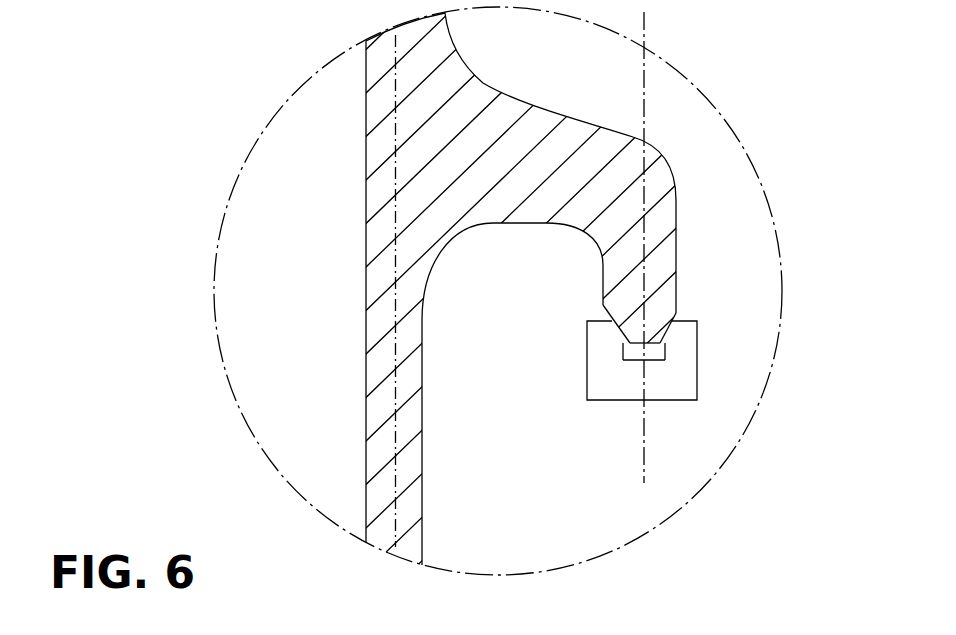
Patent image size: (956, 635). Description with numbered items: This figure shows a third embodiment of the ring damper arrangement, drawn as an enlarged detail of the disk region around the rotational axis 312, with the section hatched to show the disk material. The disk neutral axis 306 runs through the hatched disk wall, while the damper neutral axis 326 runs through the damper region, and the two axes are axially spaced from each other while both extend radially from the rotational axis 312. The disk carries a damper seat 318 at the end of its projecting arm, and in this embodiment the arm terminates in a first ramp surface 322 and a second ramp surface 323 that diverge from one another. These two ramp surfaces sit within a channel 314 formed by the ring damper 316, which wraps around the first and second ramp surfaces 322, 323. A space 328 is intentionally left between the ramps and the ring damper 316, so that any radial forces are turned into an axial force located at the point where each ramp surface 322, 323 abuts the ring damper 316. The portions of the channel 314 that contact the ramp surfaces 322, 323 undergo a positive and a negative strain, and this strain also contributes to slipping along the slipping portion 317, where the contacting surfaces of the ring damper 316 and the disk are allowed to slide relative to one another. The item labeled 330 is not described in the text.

The disk neutral axis 306 is at (385, 303).
The rotational axis 312 is at (662, 90).
The channel 314 is at (617, 353).
The ring damper 316 is at (595, 368).
The slipping portion 317 is at (617, 343).
The damper seat 318 is at (680, 312).
The first ramp surface 322 is at (622, 335).
The second ramp surface 323 is at (665, 335).
The damper neutral axis 326 is at (642, 445).
The space 328 is at (647, 349).
The seat bottom 330 is at (635, 361).